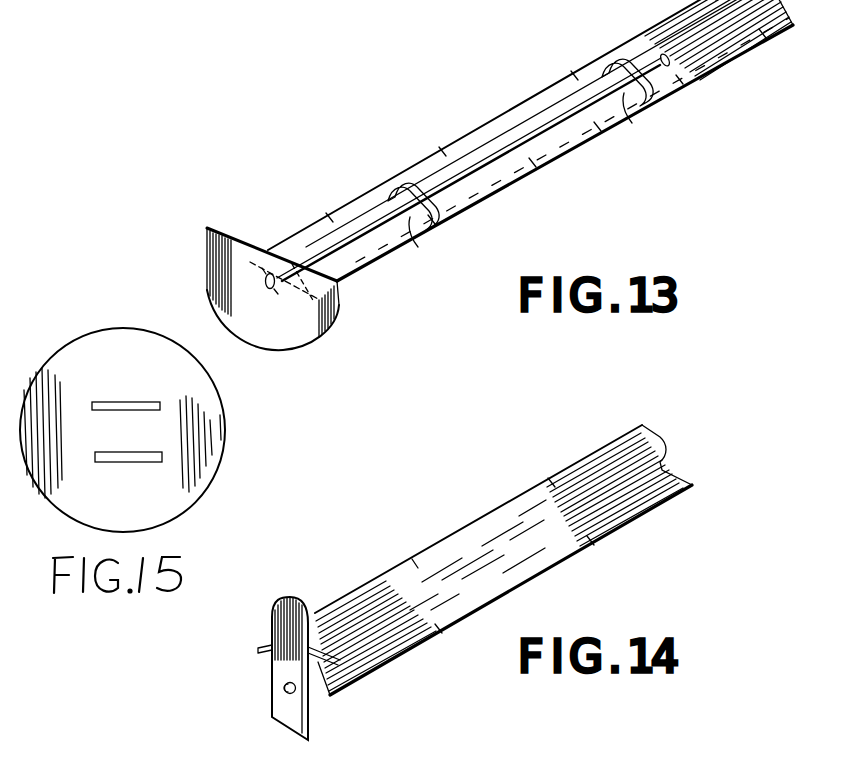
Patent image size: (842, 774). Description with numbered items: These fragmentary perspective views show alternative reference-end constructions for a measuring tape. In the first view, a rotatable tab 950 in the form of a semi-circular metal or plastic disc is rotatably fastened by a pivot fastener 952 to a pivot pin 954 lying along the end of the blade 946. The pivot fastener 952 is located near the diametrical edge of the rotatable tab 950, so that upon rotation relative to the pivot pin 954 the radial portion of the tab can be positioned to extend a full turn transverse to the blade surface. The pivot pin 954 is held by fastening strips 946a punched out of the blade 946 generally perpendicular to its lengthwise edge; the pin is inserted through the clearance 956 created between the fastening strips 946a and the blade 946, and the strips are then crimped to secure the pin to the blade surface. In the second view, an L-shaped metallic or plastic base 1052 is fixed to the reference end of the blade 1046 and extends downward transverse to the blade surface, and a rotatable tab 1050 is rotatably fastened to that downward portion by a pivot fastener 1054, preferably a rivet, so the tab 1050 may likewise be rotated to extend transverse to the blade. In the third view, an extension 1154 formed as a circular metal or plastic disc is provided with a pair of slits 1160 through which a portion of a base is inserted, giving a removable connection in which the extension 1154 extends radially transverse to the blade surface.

In FIG. 13, the blade 946 is at (484, 126).
In FIG. 13, the fastening strips 946a is at (390, 194).
In FIG. 13, the rotatable tab 950 is at (210, 252).
In FIG. 13, the pivot fastener 952 is at (266, 282).
In FIG. 13, the pivot pin 954 is at (548, 131).
In FIG. 13, the clearance 956 is at (418, 232).
In FIG. 14, the blade 1046 is at (516, 521).
In FIG. 14, the rotatable tab 1050 is at (293, 632).
In FIG. 14, the base 1052 is at (357, 672).
In FIG. 14, the pivot fastener 1054 is at (285, 688).
In FIG. 15, the extension 1154 is at (197, 433).
In FIG. 15, the slits 1160 is at (103, 400).